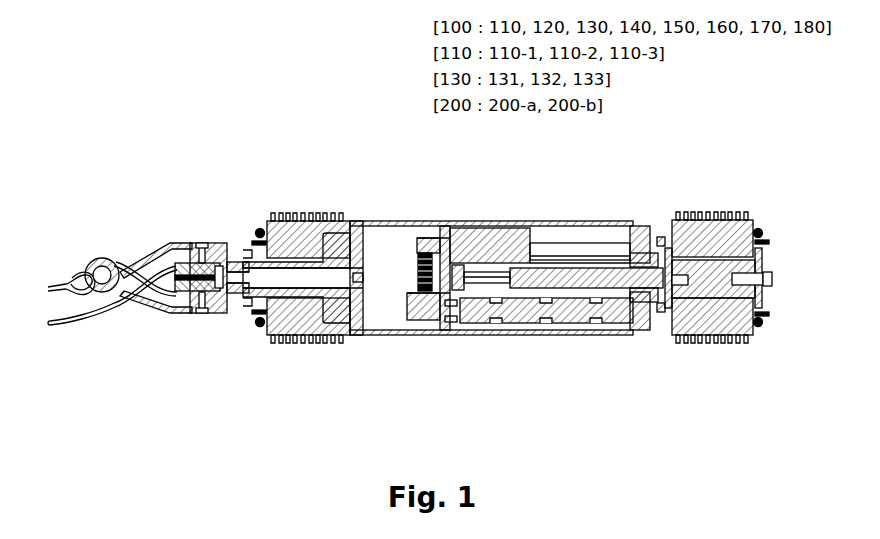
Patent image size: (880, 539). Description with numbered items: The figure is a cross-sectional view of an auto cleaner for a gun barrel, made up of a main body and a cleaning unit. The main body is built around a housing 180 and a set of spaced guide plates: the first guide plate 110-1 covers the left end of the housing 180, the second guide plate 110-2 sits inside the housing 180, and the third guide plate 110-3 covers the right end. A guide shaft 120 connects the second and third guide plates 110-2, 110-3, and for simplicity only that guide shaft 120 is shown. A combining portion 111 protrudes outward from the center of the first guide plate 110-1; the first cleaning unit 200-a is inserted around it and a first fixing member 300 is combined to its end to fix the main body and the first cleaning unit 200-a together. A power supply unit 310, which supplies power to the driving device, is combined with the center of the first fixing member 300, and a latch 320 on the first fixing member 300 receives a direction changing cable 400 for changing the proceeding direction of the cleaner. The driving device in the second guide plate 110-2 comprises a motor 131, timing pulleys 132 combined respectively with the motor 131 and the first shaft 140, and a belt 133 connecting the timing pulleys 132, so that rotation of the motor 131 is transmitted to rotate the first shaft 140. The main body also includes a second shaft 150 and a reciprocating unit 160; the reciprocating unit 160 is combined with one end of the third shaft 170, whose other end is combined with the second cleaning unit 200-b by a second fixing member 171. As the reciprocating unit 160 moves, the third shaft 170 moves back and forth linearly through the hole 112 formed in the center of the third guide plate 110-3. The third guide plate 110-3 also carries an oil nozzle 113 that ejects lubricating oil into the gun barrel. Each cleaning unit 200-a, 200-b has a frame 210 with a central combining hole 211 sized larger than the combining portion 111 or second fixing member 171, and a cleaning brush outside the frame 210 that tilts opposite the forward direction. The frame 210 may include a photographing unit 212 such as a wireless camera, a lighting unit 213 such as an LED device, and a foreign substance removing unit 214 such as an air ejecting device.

The first guide plate 110-1 is at (356, 336).
The second guide plate 110-2 is at (446, 336).
The third guide plate 110-3 is at (646, 330).
The combining portion 111 is at (299, 343).
The hole 112 is at (655, 300).
The oil nozzle 113 is at (648, 226).
The guide shaft 120 is at (592, 244).
The motor 131 is at (506, 234).
The timing pulleys 132 is at (428, 238).
The belt 133 is at (428, 278).
The first shaft 140 is at (540, 324).
The second shaft 150 is at (460, 238).
The reciprocating unit 160 is at (486, 300).
The third shaft 170 is at (566, 292).
The second fixing member 171 is at (754, 268).
The housing 180 is at (548, 220).
The first cleaning unit 200-a is at (511, 269).
The second cleaning unit 200-b is at (742, 265).
The frame 210 is at (750, 336).
The combining hole 211 is at (358, 224).
The photographing unit 212 is at (257, 327).
The lighting unit 213 is at (255, 229).
The foreign substance removing unit 214 is at (253, 243).
The first fixing member 300 is at (190, 305).
The power supply unit 310 is at (174, 288).
The latch 320 is at (101, 258).
The direction changing cable 400 is at (72, 283).